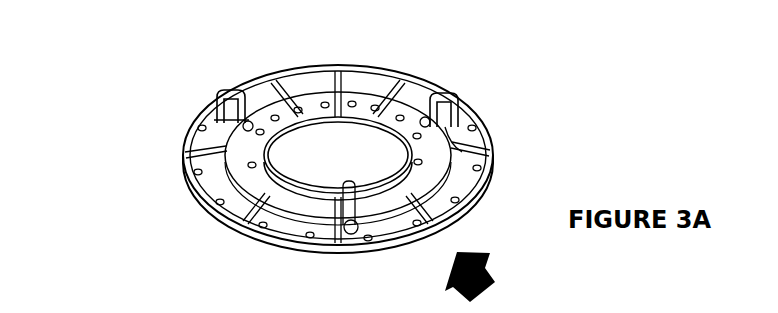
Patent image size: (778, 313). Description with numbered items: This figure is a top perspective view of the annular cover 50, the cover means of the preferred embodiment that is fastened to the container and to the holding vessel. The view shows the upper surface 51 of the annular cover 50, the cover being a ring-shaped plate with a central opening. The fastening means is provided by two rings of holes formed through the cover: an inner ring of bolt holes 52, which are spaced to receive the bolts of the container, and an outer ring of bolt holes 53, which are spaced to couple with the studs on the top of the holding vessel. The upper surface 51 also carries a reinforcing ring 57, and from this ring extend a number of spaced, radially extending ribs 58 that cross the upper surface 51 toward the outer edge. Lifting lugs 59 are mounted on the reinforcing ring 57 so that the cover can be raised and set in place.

The annular cover 50 is at (500, 178).
The upper surface 51 is at (483, 138).
The inner ring of bolt holes 52 is at (353, 102).
The outer ring of bolt holes 53 is at (471, 126).
The reinforcing ring 57 is at (246, 188).
The radially extending ribs 58 is at (198, 174).
The lifting lugs 59 is at (218, 92).